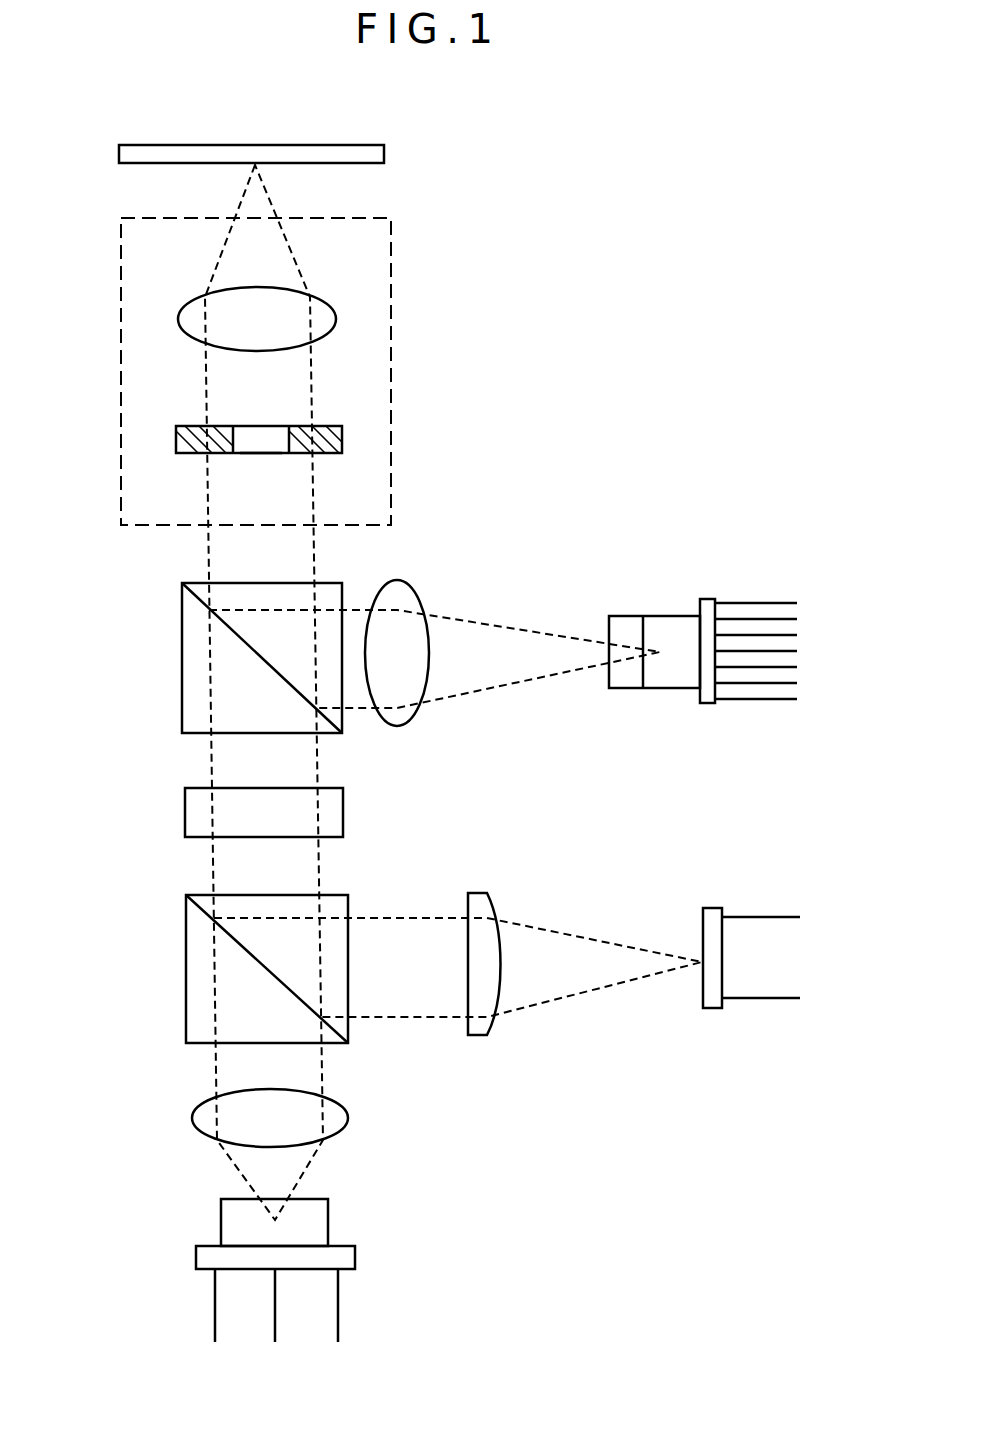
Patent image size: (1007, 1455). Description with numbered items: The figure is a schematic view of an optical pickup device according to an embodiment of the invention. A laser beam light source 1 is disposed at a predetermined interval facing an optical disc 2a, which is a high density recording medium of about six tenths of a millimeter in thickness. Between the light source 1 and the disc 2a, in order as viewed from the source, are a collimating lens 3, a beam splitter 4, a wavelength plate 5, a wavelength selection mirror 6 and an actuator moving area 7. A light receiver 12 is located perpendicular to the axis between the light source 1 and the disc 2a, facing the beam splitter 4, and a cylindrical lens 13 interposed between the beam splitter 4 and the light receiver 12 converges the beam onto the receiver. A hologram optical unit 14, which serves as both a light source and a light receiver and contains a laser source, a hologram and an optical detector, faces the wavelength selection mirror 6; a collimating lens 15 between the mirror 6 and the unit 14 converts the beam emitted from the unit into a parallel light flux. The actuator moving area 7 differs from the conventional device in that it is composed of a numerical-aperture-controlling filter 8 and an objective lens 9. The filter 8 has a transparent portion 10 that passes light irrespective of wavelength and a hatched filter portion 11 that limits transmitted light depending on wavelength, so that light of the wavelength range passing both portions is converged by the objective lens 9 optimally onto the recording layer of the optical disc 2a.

The laser beam light source 1 is at (312, 1225).
The optical disc 2a is at (362, 151).
The collimating lens 3 is at (210, 1122).
The beam splitter 4 is at (200, 963).
The wavelength plate 5 is at (190, 810).
The wavelength selection mirror 6 is at (190, 657).
The actuator moving area 7 is at (142, 253).
The numerical-aperture-controlling filter 8 is at (342, 440).
The objective lens 9 is at (323, 322).
The transparent portion 10 is at (260, 448).
The filter portion 11 is at (183, 440).
The light receiver 12 is at (760, 988).
The cylindrical lens 13 is at (480, 1026).
The hologram optical unit 14 is at (670, 627).
The collimating lens 15 is at (393, 600).